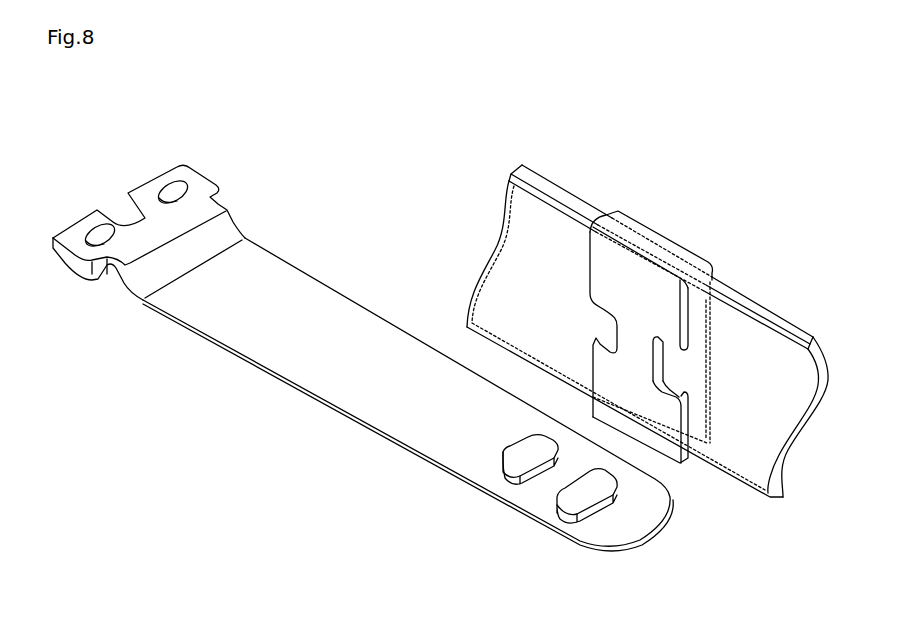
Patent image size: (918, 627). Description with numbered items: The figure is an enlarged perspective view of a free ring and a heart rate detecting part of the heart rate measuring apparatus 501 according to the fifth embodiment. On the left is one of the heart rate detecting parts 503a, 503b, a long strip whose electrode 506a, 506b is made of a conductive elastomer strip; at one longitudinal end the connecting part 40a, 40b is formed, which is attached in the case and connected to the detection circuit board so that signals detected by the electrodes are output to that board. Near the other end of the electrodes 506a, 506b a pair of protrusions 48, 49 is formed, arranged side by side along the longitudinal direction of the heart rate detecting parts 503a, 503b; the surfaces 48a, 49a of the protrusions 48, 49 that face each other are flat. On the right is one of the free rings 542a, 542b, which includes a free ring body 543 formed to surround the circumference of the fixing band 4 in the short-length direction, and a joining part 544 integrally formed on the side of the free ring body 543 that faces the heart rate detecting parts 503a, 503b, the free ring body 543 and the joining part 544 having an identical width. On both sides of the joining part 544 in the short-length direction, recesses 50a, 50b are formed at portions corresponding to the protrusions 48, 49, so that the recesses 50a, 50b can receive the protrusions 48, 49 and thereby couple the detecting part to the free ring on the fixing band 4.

The fixing band 4 is at (779, 314).
The connecting part 40a is at (200, 173).
The connecting part 40b is at (165, 199).
The protrusion 48 is at (506, 466).
The surface of protrusion 48a is at (537, 463).
The protrusion 49 is at (567, 513).
The surface of protrusion 49a is at (580, 481).
The recess 50a is at (603, 323).
The recess 50b is at (657, 358).
The heart rate measuring apparatus 501 is at (452, 169).
The heart rate detecting part 503a is at (241, 361).
The heart rate detecting part 503b is at (408, 394).
The electrode 506a is at (367, 424).
The electrode 506b is at (408, 427).
The free ring 542a is at (670, 233).
The free ring 542b is at (653, 306).
The free ring body 543 is at (712, 318).
The joining part 544 is at (686, 411).